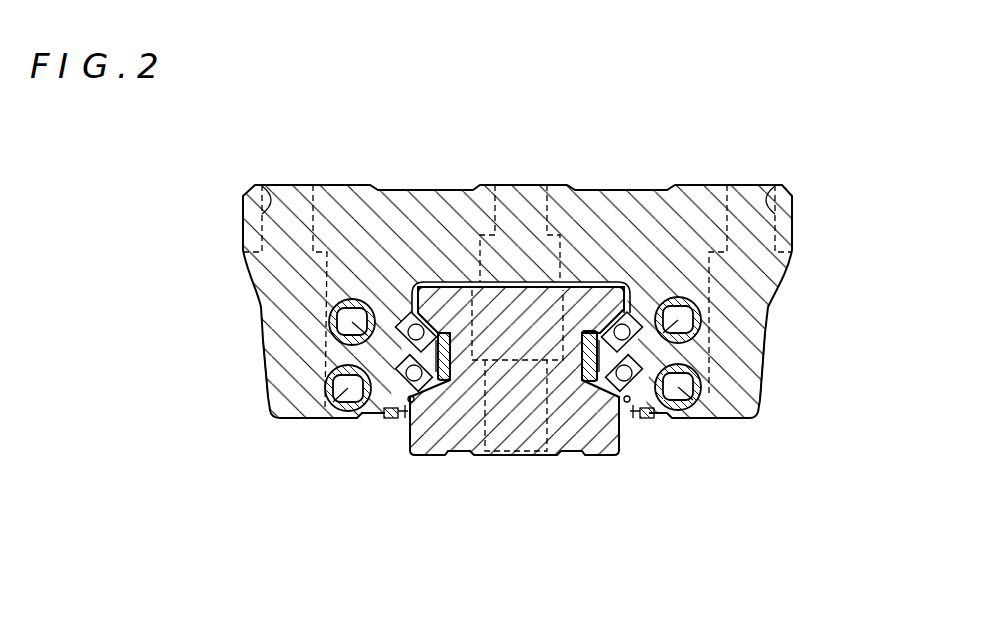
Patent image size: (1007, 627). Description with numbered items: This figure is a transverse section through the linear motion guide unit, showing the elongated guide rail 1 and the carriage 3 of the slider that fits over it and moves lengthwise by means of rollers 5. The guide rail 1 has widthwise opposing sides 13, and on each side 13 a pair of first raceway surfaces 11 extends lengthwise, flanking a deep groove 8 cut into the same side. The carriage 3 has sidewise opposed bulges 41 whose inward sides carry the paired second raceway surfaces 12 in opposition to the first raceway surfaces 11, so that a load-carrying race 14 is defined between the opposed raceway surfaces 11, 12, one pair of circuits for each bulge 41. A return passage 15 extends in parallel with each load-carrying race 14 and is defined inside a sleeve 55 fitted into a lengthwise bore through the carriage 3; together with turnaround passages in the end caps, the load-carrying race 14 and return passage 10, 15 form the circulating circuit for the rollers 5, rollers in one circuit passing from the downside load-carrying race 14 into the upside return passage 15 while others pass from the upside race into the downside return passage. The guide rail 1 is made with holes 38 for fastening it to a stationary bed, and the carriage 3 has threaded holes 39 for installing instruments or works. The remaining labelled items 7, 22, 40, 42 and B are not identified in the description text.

The guide rail 1 is at (480, 456).
The carriage 3 is at (680, 245).
The roller 5 is at (356, 299).
The upper ball rolling groove 7 is at (448, 345).
The deep groove 8 is at (592, 338).
The return passage 10 is at (443, 383).
The first raceway surfaces 11 is at (437, 338).
The second raceway surfaces 12 is at (620, 334).
The widthwise opposing sides 13 is at (615, 400).
The load-carrying race 14 is at (403, 328).
The return passage 15 is at (337, 385).
The top cover 22 is at (631, 326).
The holes 38 is at (503, 456).
The threaded holes 39 is at (266, 184).
The center mounting hole 40 is at (517, 237).
The sidewise opposed bulges 41 is at (285, 308).
The under seal 42 is at (392, 416).
The sleeve 55 is at (337, 400).
The bottom region B is at (665, 418).